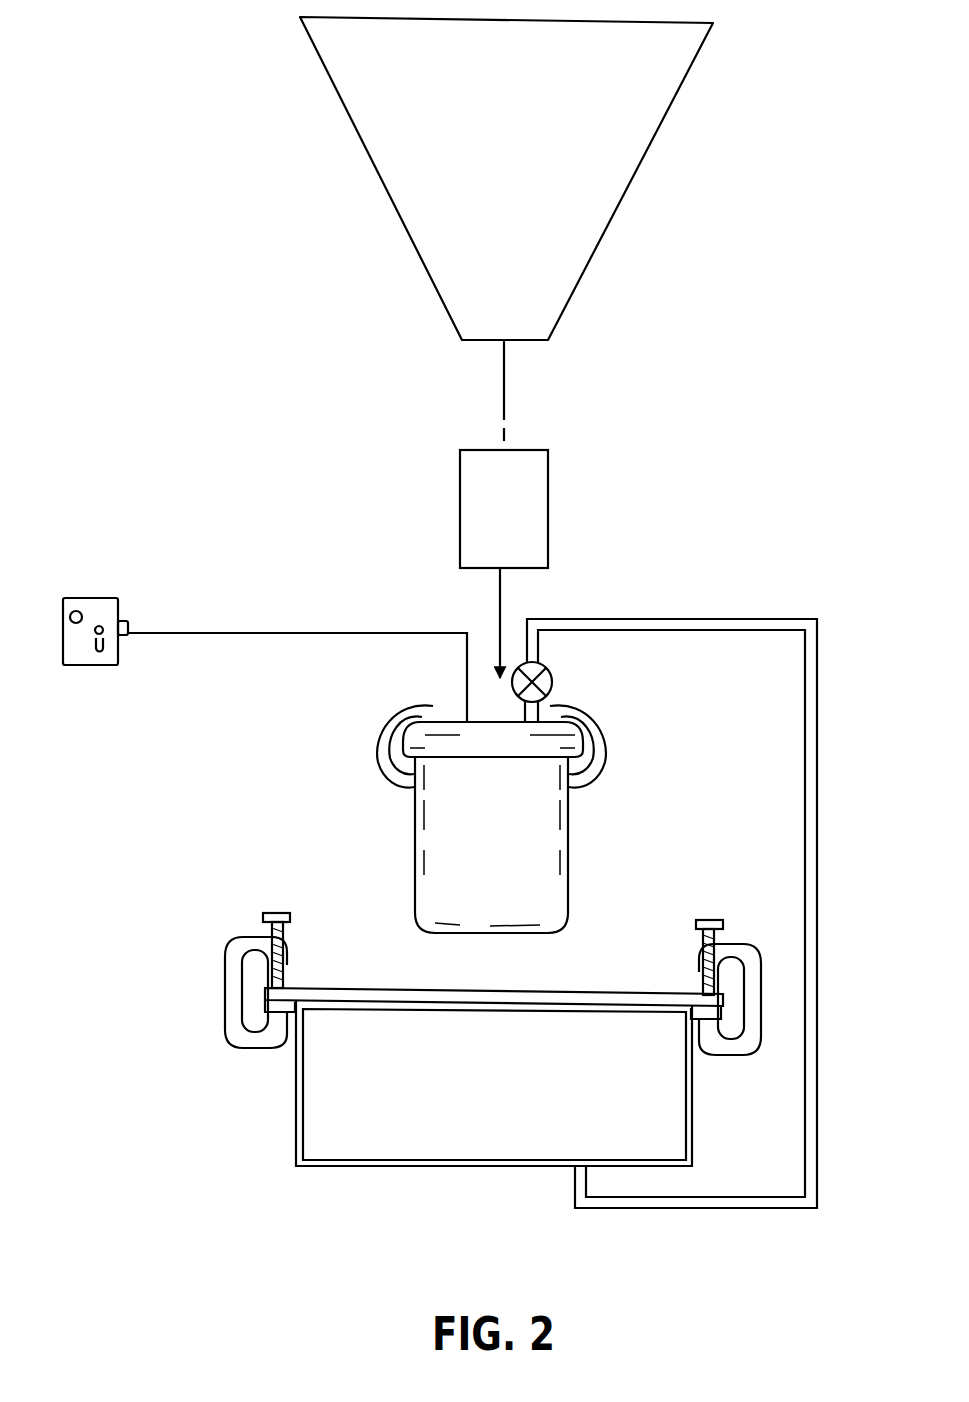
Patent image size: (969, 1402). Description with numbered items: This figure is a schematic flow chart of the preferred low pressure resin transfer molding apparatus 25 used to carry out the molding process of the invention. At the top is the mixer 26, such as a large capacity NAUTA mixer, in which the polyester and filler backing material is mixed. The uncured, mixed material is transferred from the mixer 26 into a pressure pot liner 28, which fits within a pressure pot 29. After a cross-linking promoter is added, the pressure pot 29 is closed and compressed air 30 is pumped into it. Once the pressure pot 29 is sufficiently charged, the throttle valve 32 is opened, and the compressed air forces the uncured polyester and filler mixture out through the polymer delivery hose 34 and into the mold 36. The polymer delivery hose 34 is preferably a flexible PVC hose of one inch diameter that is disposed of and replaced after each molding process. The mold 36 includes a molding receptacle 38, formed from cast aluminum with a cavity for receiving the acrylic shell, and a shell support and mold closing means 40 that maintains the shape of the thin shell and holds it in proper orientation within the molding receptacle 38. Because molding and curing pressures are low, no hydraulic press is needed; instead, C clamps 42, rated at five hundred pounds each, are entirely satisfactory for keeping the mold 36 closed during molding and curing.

The low pressure resin transfer molding apparatus 25 is at (738, 290).
The mixer 26 is at (371, 164).
The pressure pot liner 28 is at (548, 492).
The pressure pot 29 is at (413, 816).
The compressed air 30 is at (142, 616).
The throttle valve 32 is at (549, 670).
The polymer delivery hose 34 is at (817, 781).
The mold 36 is at (270, 1081).
The molding receptacle 38 is at (310, 1166).
The shell support and mold closing means 40 is at (332, 986).
The C clamps 42 is at (223, 985).